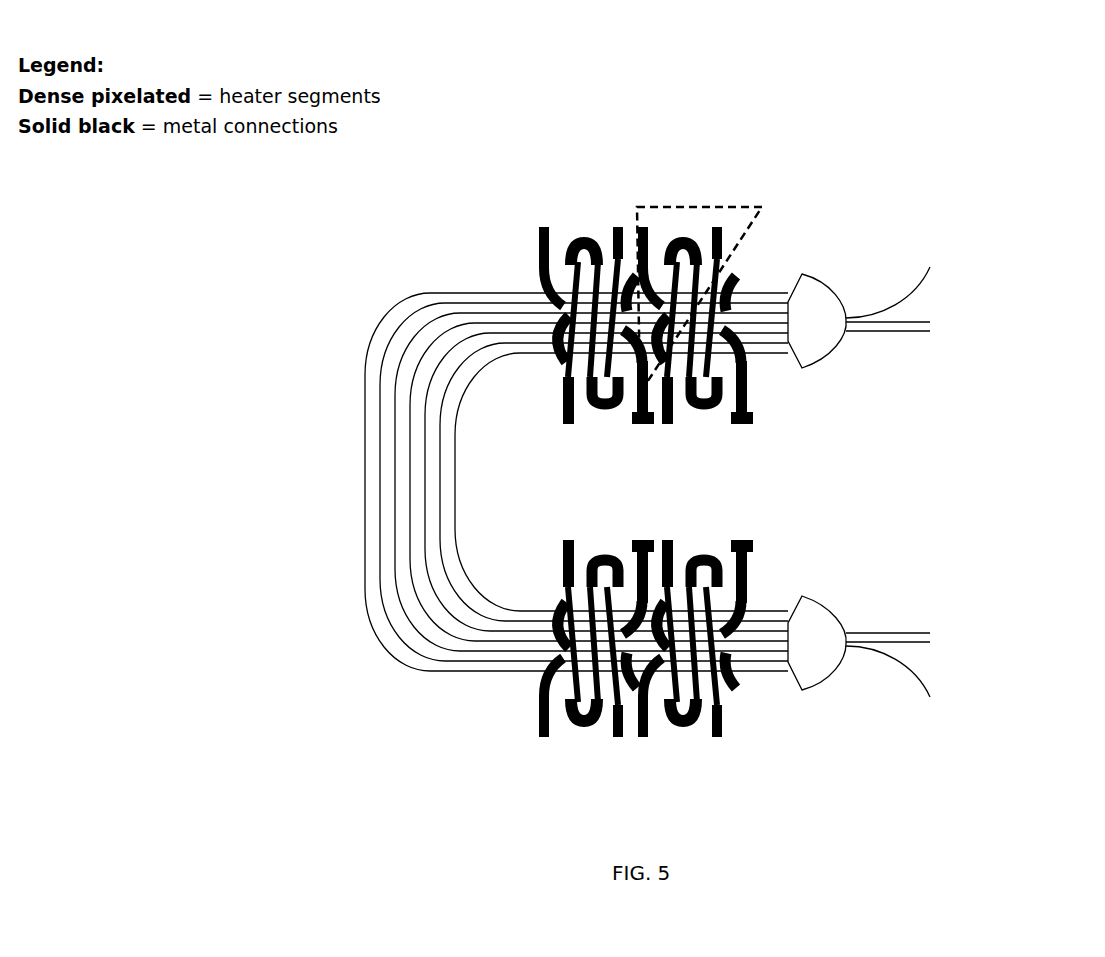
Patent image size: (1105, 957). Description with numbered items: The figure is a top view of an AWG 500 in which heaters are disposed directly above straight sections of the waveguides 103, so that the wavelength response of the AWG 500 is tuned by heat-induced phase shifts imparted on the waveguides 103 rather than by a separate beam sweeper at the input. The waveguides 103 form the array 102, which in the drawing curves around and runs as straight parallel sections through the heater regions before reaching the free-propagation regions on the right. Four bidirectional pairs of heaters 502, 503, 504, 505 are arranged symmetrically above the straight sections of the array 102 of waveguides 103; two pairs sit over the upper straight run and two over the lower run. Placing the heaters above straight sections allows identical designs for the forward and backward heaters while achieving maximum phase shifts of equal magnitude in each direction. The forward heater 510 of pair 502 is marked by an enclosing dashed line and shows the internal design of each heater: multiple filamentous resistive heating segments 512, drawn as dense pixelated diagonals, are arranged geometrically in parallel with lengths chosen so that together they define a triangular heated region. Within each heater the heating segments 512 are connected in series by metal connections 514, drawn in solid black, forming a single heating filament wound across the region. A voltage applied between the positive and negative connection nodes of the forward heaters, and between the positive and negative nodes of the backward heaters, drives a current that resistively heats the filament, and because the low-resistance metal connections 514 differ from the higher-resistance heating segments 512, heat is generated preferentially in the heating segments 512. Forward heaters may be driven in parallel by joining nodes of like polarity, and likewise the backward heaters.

The AWG 500 is at (965, 142).
The array 102 is at (358, 536).
The waveguides 103 is at (399, 462).
The bidirectional pair of heaters 503 is at (507, 229).
The bidirectional pair of heaters 502 is at (755, 248).
The bidirectional pair of heaters 504 is at (515, 760).
The bidirectional pair of heaters 505 is at (752, 733).
The forward heater 510 is at (703, 207).
The heating segments 512 is at (565, 300).
The metal connections 514 is at (583, 232).